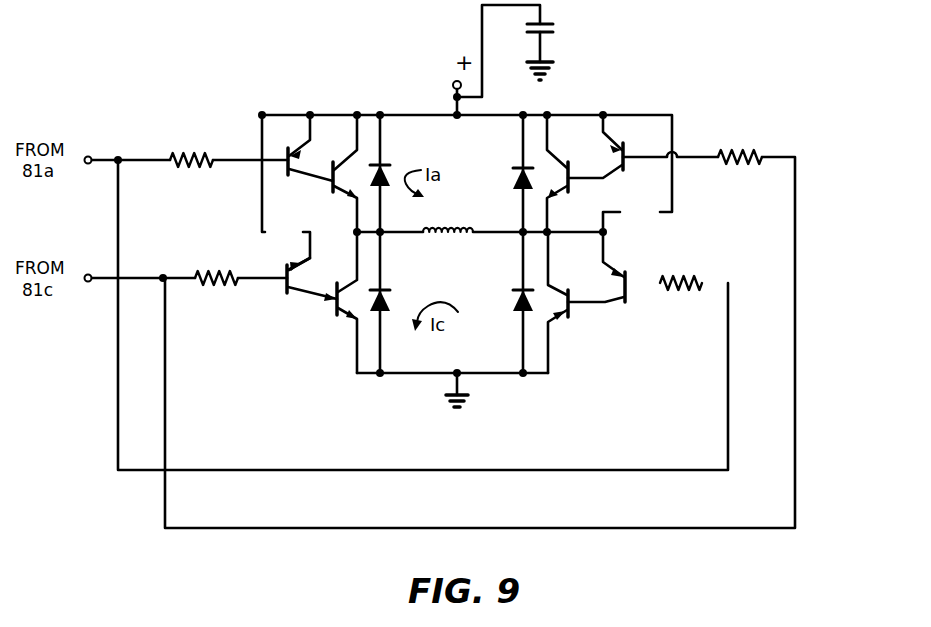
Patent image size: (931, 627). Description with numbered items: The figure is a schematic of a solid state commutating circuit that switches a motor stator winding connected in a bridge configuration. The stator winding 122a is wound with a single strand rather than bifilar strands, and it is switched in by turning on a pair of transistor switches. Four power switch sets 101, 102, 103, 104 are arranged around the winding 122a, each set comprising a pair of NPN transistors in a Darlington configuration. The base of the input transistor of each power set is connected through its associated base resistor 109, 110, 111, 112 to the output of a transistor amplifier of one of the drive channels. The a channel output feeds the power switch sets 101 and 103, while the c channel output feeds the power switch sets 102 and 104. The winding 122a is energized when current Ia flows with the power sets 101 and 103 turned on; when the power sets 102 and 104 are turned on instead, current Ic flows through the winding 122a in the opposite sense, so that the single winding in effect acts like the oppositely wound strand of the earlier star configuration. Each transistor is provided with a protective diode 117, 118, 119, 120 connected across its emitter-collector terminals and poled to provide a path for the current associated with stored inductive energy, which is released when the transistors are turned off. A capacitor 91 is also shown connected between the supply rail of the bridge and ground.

The filter capacitor 91 is at (546, 31).
The power switch set 101 is at (320, 136).
The power switch set 102 is at (573, 141).
The power switch set 103 is at (578, 272).
The power switch set 104 is at (326, 300).
The base resistor 109 is at (228, 122).
The base resistor 110 is at (748, 150).
The base resistor 111 is at (683, 275).
The base resistor 112 is at (228, 270).
The protective diode 117 is at (392, 176).
The protective diode 118 is at (518, 172).
The protective diode 119 is at (518, 298).
The protective diode 120 is at (392, 300).
The stator winding 122a is at (422, 231).